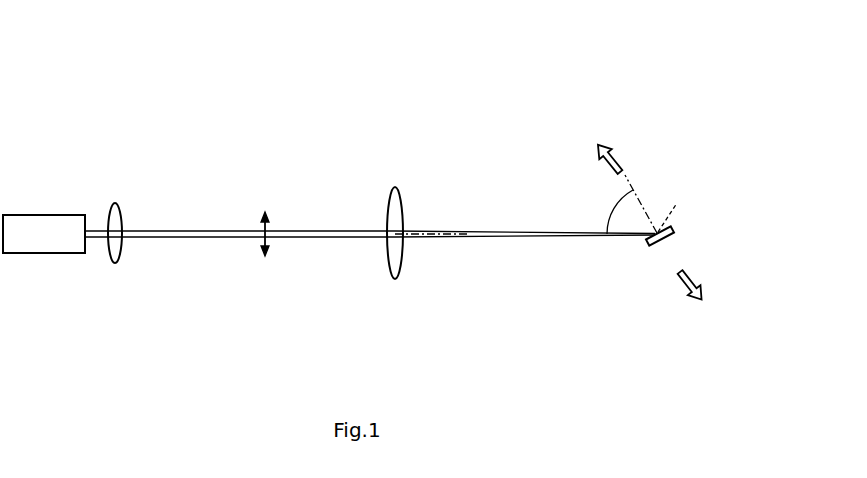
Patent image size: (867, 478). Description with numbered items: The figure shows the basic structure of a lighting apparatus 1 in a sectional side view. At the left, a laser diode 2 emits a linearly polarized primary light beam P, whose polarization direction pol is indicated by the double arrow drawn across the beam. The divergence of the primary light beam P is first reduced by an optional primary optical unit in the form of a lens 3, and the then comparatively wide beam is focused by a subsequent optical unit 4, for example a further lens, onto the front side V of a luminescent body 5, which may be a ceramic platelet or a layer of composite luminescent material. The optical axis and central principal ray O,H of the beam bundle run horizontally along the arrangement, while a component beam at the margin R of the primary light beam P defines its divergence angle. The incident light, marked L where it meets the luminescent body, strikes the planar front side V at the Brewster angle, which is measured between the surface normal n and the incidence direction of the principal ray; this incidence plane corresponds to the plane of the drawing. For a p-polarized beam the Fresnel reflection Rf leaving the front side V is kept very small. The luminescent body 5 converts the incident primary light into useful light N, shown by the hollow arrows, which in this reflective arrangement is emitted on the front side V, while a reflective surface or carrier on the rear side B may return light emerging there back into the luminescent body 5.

The lighting apparatus 1 is at (96, 116).
The laser diode 2 is at (41, 253).
The lens 3 is at (115, 265).
The optical unit 4 is at (395, 186).
The luminescent body 5 is at (650, 246).
The primary light beam P is at (211, 230).
The polarization direction pol is at (266, 206).
The optical axis and principal ray of the primary light beam O,H is at (460, 230).
The margin of the primary light beam R is at (515, 226).
The incident beam L is at (648, 227).
The surface normal n is at (628, 178).
The Fresnel reflection Rf is at (677, 203).
The front side of the luminescent body V is at (672, 230).
The rear side of the luminescent body B is at (673, 236).
The useful light N is at (613, 148).